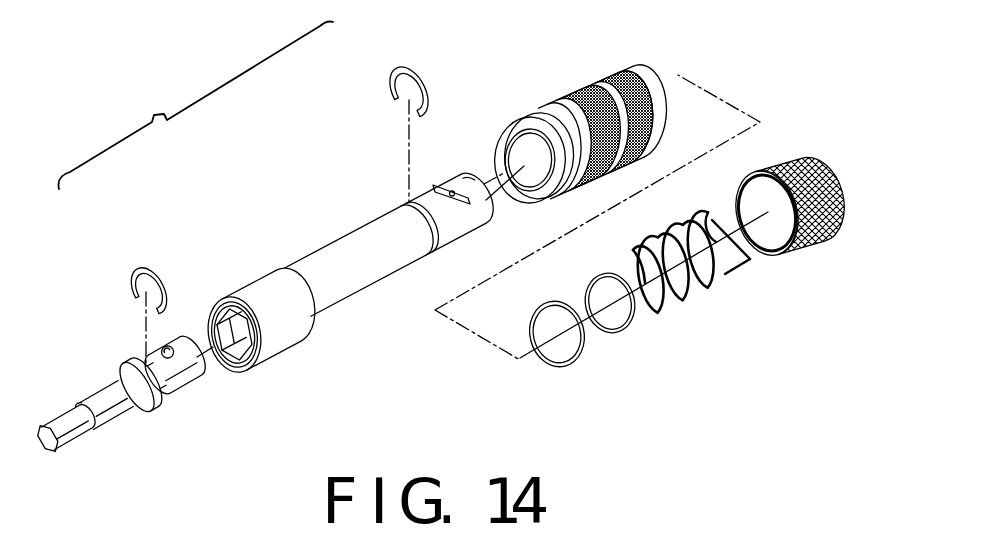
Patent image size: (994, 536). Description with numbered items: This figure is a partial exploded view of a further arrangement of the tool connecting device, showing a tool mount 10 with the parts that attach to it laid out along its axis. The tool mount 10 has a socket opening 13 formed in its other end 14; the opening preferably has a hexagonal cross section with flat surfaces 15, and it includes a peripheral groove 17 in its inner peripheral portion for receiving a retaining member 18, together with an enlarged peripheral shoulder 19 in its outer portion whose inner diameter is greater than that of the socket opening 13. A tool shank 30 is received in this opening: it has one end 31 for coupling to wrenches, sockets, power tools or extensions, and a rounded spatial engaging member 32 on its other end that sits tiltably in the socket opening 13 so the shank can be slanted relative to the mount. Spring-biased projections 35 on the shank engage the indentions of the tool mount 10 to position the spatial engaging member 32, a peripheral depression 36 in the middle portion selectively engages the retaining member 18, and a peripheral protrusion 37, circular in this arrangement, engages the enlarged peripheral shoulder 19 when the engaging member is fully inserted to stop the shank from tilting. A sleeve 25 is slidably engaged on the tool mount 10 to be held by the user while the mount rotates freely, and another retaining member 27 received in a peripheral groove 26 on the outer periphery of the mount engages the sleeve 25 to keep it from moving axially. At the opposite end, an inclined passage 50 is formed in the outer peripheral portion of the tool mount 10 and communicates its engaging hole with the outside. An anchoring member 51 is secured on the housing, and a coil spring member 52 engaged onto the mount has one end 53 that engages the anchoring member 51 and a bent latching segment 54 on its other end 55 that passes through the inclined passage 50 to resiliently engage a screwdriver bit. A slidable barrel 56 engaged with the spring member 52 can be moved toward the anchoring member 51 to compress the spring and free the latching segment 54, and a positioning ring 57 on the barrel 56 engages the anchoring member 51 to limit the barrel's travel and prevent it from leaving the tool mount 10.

The tool mount 10 is at (343, 260).
The socket opening 13 is at (215, 307).
The other end 14 is at (246, 289).
The flat surfaces 15 is at (255, 343).
The peripheral groove 17 is at (217, 365).
The retaining member 18 is at (133, 270).
The enlarged peripheral shoulder 19 is at (246, 362).
The sleeve 25 is at (568, 97).
The peripheral groove 26 is at (403, 203).
The retaining member 27 is at (402, 66).
The tool shank 30 is at (110, 410).
The one end 31 is at (50, 453).
The spatial engaging member 32 is at (178, 393).
The spring-biased projections 35 is at (166, 345).
The peripheral depression 36 is at (165, 393).
The peripheral protrusion 37 is at (138, 360).
The inclined passage 50 is at (453, 192).
The anchoring member 51 is at (625, 332).
The spring member 52 is at (693, 287).
The one end 53 is at (626, 257).
The latching segment 54 is at (708, 222).
The other end 55 is at (733, 280).
The barrel 56 is at (813, 247).
The positioning ring 57 is at (560, 367).